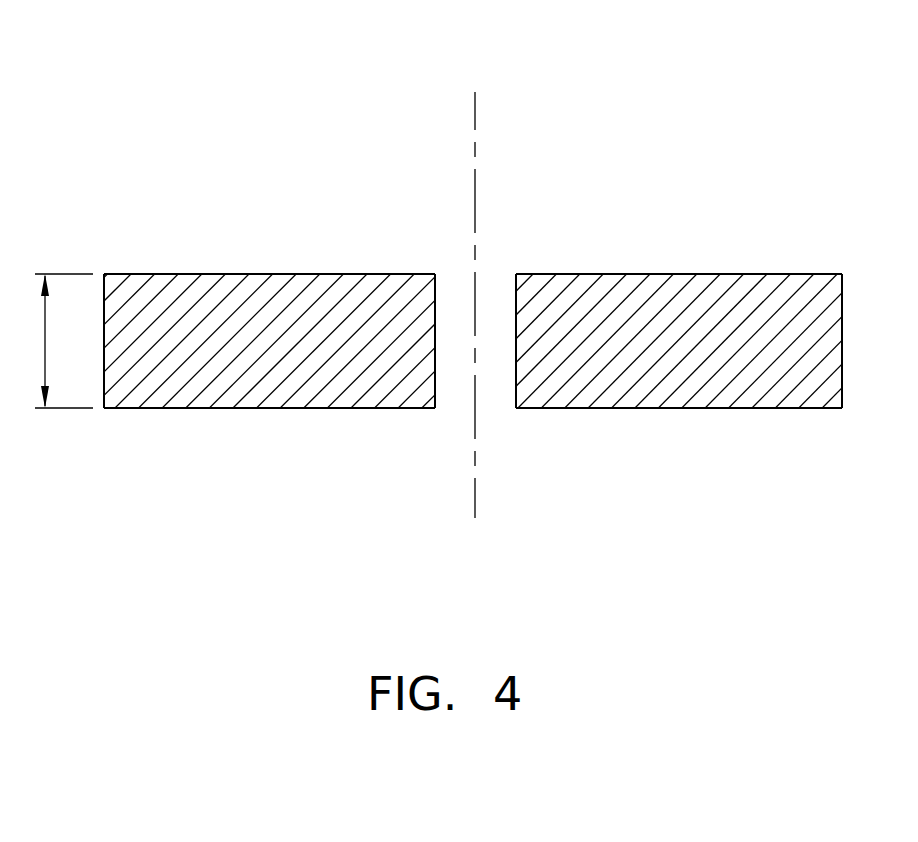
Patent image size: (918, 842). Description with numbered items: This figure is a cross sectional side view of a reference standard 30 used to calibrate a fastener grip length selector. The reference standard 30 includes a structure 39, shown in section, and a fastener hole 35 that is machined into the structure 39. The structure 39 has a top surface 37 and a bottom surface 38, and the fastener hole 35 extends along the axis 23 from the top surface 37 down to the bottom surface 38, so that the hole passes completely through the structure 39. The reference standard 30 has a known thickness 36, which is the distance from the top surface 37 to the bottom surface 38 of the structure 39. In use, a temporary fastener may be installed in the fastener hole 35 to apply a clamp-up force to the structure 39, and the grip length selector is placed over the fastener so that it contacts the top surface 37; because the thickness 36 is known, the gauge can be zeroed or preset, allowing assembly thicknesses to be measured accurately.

The reference standard 30 is at (261, 74).
The axis 23 is at (475, 120).
The fastener hole 35 is at (452, 390).
The thickness 36 is at (55, 323).
The top surface 37 is at (663, 274).
The bottom surface 38 is at (740, 408).
The structure 39 is at (622, 390).